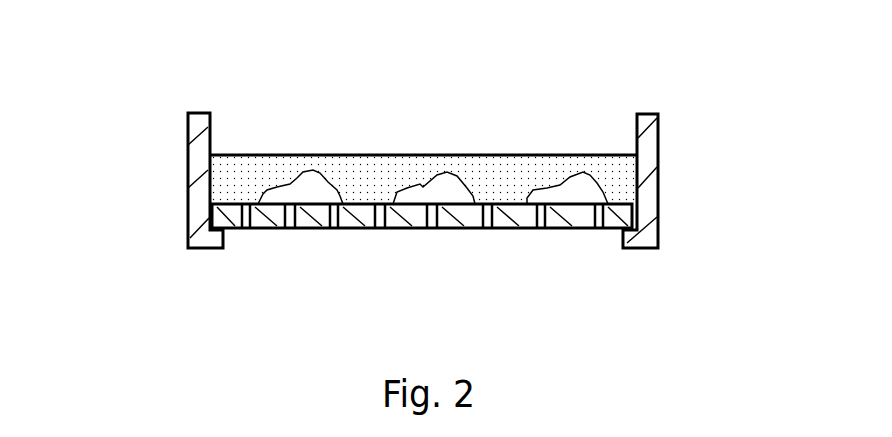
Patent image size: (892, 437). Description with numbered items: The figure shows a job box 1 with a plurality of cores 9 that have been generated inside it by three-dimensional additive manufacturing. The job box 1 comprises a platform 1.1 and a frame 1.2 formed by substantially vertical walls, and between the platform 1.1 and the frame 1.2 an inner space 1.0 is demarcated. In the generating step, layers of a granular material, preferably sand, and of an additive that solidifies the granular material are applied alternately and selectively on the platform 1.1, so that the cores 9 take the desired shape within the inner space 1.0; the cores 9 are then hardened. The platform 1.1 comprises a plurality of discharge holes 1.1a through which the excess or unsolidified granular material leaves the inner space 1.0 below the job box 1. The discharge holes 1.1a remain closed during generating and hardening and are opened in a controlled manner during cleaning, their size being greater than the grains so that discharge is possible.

The job box 1 is at (160, 113).
The inner space 1.0 is at (437, 120).
The platform 1.1 is at (305, 215).
The discharge holes 1.1a is at (382, 215).
The frame 1.2 is at (198, 167).
The cores 9 is at (314, 187).